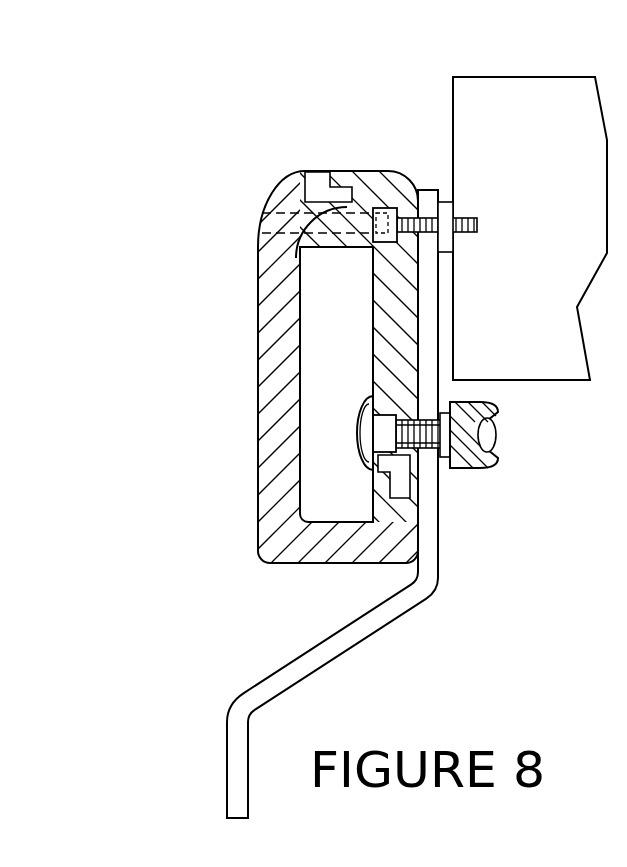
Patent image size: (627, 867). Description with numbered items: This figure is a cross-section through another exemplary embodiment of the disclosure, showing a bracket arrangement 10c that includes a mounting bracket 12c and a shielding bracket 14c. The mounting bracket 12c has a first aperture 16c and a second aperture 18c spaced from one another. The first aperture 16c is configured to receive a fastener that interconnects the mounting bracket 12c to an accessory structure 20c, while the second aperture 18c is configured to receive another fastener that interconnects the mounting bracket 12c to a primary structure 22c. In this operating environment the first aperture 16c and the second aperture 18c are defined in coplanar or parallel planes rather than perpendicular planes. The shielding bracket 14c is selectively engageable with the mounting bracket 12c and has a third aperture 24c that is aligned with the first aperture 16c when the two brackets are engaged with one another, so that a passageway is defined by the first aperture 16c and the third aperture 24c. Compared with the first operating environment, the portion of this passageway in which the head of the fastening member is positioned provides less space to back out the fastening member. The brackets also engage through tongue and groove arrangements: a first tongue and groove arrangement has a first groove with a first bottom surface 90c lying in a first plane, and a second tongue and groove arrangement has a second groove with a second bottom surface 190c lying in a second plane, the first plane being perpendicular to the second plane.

The bracket arrangement 10c is at (232, 126).
The mounting bracket 12c is at (373, 312).
The shielding bracket 14c is at (258, 472).
The first aperture 16c is at (452, 227).
The second aperture 18c is at (384, 455).
The accessory structure 20c is at (581, 232).
The primary structure 22c is at (228, 762).
The third aperture 24c is at (312, 208).
The first bottom surface 90c is at (344, 190).
The second bottom surface 190c is at (392, 490).